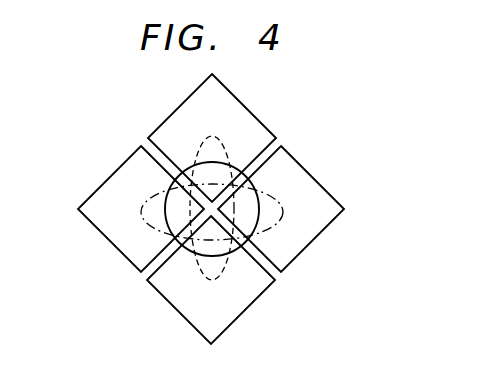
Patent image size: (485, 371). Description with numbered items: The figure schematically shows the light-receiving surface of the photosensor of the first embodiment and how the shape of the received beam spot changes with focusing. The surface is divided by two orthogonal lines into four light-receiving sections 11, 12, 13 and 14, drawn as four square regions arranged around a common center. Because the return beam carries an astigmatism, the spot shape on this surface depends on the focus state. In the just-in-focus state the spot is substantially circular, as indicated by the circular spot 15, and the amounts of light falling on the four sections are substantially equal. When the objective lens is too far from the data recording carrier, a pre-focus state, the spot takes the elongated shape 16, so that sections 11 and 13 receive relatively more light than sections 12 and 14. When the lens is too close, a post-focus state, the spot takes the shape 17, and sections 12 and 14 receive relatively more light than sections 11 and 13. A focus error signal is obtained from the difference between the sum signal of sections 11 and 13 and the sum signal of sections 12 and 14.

The light-receiving section 11 is at (250, 110).
The light-receiving section 12 is at (315, 177).
The light-receiving section 13 is at (178, 315).
The light-receiving section 14 is at (102, 185).
The substantially circular spot 15 is at (258, 222).
The pre-focus spot shape 16 is at (225, 271).
The post-focus spot shape 17 is at (280, 205).